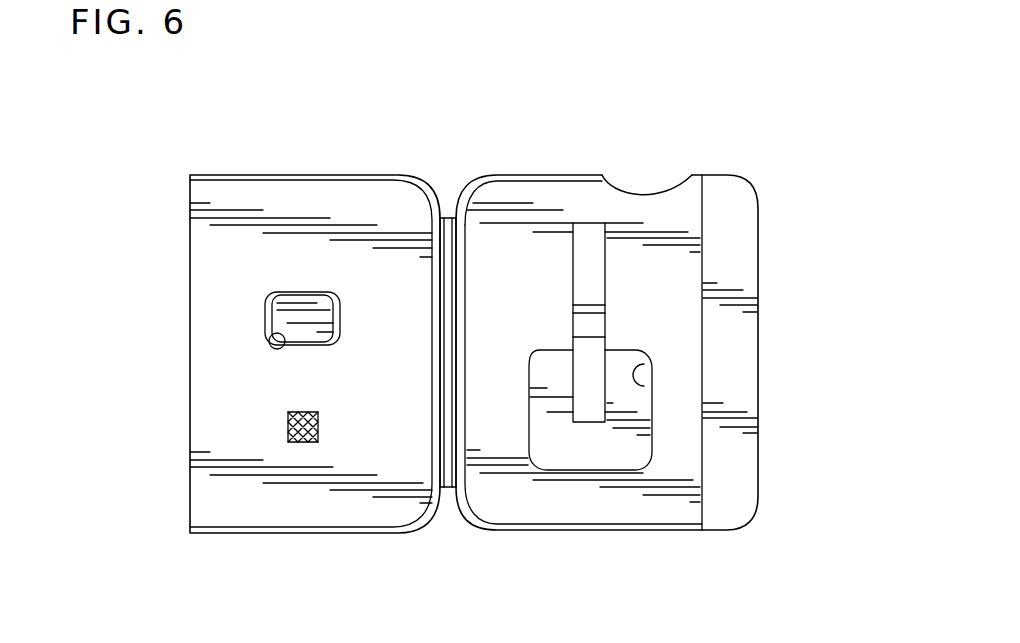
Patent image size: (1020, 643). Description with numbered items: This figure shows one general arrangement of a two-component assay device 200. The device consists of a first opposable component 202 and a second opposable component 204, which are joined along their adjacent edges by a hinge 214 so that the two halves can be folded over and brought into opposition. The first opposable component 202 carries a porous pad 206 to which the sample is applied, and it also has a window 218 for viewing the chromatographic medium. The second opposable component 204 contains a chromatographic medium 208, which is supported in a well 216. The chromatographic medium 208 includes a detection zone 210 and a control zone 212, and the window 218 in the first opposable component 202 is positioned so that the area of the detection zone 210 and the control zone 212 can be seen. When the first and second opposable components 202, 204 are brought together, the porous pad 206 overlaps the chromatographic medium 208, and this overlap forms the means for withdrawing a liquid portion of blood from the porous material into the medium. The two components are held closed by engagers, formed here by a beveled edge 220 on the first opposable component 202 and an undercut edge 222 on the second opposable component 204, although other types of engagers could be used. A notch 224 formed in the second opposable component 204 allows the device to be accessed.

The assay device 200 is at (455, 546).
The first opposable component 202 is at (247, 192).
The second opposable component 204 is at (524, 190).
The porous pad 206 is at (288, 428).
The chromatographic medium 208 is at (595, 225).
The detection zone 210 is at (573, 313).
The control zone 212 is at (605, 305).
The hinge 214 is at (443, 216).
The well 216 is at (650, 364).
The window 218 is at (270, 350).
The beveled edge 220 is at (190, 237).
The undercut edge 222 is at (703, 515).
The notch 224 is at (665, 190).